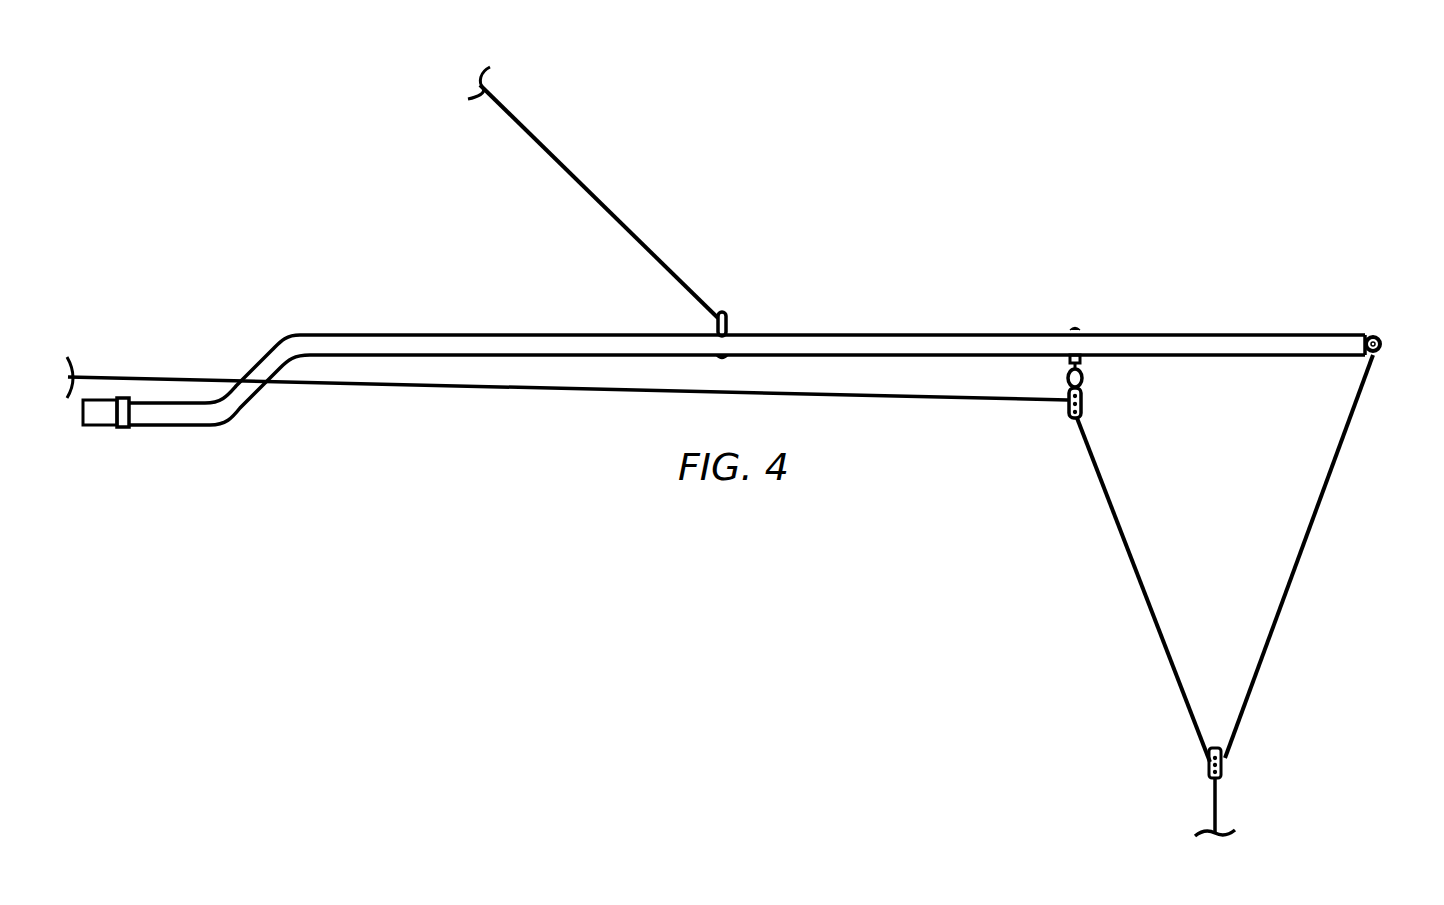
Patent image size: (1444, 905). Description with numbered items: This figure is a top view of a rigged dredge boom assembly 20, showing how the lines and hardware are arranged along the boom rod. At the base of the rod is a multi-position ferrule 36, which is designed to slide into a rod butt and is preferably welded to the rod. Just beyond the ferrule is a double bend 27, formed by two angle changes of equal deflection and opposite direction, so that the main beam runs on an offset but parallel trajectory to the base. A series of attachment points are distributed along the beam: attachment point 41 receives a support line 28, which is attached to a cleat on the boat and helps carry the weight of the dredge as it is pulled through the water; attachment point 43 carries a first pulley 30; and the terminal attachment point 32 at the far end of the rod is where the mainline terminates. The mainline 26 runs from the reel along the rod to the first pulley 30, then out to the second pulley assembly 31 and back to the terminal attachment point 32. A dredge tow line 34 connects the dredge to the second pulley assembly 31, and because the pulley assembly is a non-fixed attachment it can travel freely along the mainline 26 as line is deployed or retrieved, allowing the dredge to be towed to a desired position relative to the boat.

The tethering system 20 is at (1163, 266).
The line 26 is at (430, 384).
The double bend 27 is at (258, 343).
The line 28 is at (605, 208).
The first pulley 30 is at (1070, 418).
The second pulley assembly 31 is at (1205, 778).
The terminal attachment point 32 is at (1382, 346).
The dredge tow line 34 is at (1220, 800).
The multi-position ferrule 36 is at (100, 426).
The attachment point 41 is at (729, 324).
The attachment point 43 is at (1085, 367).